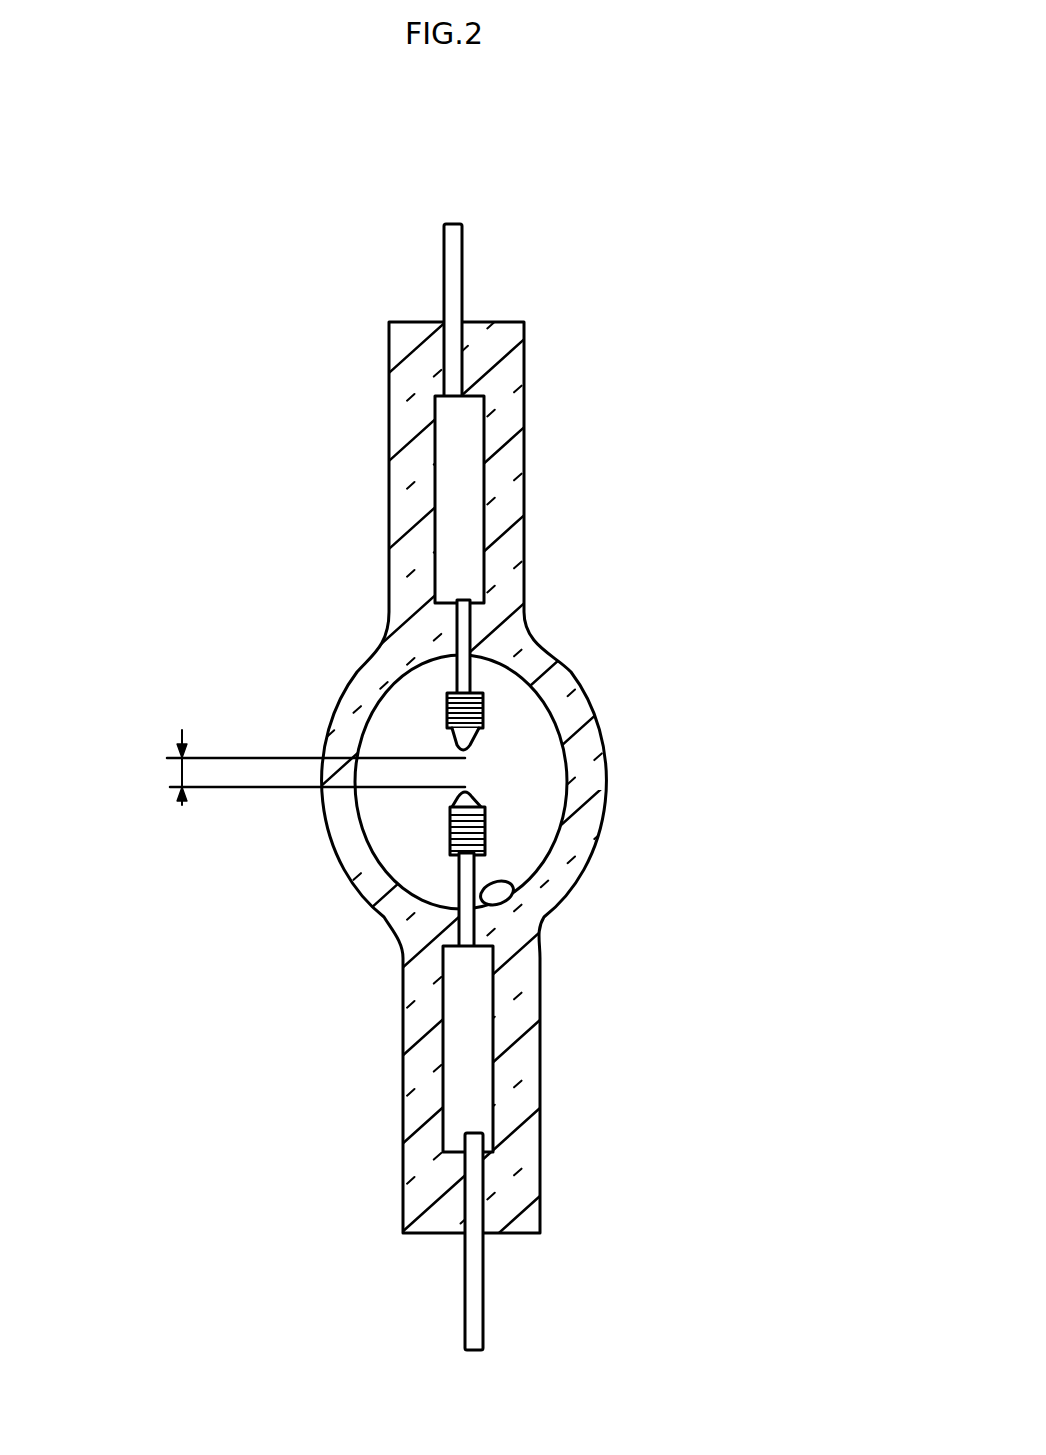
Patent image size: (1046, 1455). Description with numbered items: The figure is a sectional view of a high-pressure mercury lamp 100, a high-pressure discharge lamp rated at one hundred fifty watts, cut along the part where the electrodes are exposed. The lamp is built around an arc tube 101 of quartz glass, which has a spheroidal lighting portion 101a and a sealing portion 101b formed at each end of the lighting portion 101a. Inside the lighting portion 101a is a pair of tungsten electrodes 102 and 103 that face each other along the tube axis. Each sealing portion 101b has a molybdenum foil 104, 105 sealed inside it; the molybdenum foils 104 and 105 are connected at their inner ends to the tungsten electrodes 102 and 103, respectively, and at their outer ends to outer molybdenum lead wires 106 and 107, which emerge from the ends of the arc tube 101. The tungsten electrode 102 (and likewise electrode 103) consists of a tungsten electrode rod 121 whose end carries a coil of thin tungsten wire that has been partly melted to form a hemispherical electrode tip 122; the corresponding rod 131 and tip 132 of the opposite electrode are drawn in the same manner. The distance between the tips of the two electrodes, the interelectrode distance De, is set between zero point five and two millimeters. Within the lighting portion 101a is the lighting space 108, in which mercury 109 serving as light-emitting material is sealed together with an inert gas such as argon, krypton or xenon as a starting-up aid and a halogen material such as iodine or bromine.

The high-pressure mercury lamp 100 is at (262, 540).
The arc tube 101 is at (340, 690).
The lighting portion 101a is at (597, 752).
The sealing portion 101b is at (524, 450).
The tungsten electrode 102 is at (484, 718).
The tungsten electrode 103 is at (486, 828).
The molybdenum foil 104 is at (470, 522).
The molybdenum foil 105 is at (470, 1050).
The outer molybdenum lead wire 106 is at (455, 290).
The outer molybdenum lead wire 107 is at (480, 1285).
The lighting space 108 is at (537, 772).
The mercury 109 is at (515, 895).
The electrode rod 121 is at (470, 650).
The electrode tip 122 is at (472, 748).
The electrode rod of second electrode 131 is at (442, 922).
The tip of second electrode 132 is at (472, 802).
The interelectrode distance De is at (286, 767).